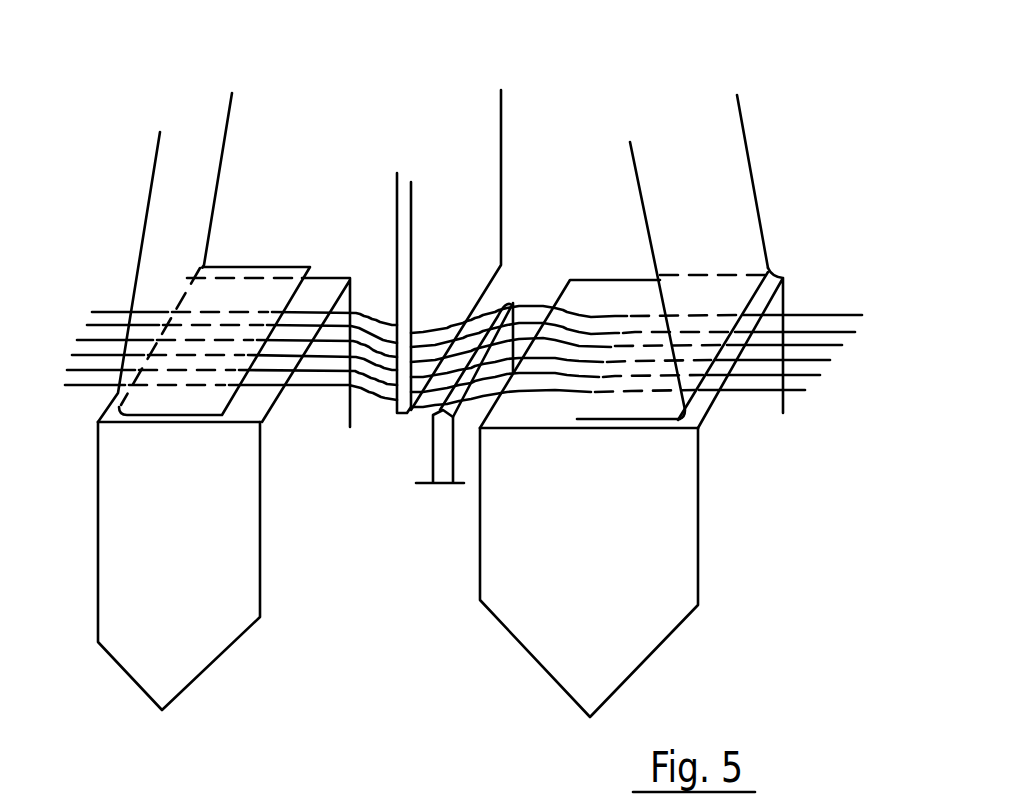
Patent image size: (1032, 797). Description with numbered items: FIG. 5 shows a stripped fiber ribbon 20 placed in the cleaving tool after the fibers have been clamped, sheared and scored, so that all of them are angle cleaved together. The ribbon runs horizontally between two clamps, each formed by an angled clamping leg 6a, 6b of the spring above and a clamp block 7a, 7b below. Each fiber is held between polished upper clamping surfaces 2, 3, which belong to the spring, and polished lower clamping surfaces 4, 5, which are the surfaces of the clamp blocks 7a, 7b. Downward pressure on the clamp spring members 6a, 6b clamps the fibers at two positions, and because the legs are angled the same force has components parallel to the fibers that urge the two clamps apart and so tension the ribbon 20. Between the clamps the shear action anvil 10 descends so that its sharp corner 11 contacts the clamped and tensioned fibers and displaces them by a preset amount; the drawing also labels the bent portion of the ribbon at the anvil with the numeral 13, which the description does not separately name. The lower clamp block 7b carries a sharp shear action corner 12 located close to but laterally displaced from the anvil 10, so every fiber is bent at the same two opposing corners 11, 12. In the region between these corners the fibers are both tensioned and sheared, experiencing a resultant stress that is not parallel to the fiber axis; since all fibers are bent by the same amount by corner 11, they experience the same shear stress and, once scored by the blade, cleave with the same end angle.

The upper clamping surface 2 is at (181, 428).
The upper clamping surface 3 is at (662, 432).
The lower clamping surface 4 is at (256, 406).
The lower clamping surface 5 is at (562, 418).
The clamping leg 6a is at (192, 120).
The clamping leg 6b is at (722, 146).
The clamp block 7a is at (140, 523).
The clamp block 7b is at (677, 573).
The shear action anvil 10 is at (480, 134).
The sharp corner 11 is at (407, 430).
The sharp shear action corner 12 is at (493, 444).
The thread loop 13 is at (519, 288).
The fiber ribbon 20 is at (897, 311).